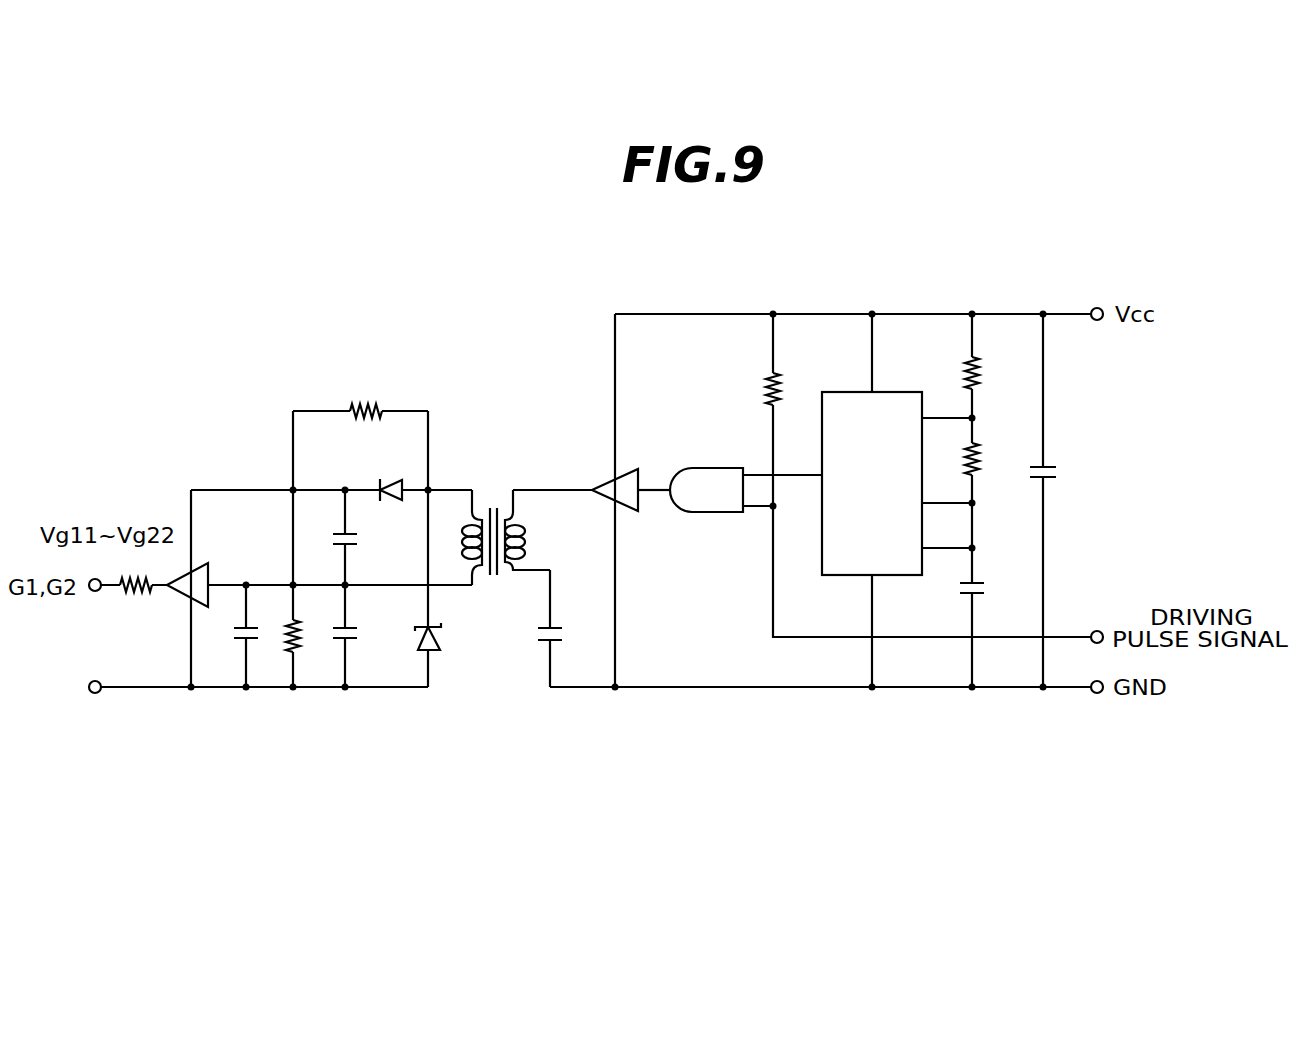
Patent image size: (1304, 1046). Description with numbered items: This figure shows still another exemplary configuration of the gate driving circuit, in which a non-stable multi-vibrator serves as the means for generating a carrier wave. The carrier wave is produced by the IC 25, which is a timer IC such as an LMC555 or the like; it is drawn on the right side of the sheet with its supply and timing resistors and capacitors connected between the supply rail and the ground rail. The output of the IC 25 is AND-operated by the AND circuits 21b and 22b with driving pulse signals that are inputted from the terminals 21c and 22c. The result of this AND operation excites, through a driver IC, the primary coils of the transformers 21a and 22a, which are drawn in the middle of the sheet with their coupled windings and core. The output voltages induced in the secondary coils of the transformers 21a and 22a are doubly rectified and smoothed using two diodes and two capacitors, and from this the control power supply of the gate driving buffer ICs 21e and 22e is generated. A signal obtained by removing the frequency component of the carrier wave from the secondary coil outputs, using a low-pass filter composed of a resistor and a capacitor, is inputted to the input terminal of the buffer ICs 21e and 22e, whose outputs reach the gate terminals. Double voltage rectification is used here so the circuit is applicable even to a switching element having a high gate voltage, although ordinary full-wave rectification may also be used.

The gate driving buffer IC 21e is at (213, 659).
The gate driving buffer IC 22e is at (202, 602).
The transformer 21a is at (504, 618).
The transformer 22a is at (493, 577).
The AND circuit 21b is at (723, 612).
The AND circuit 22b is at (715, 513).
The terminal 21c is at (1101, 607).
The terminal 22c is at (1097, 631).
The timer IC 25 is at (907, 392).